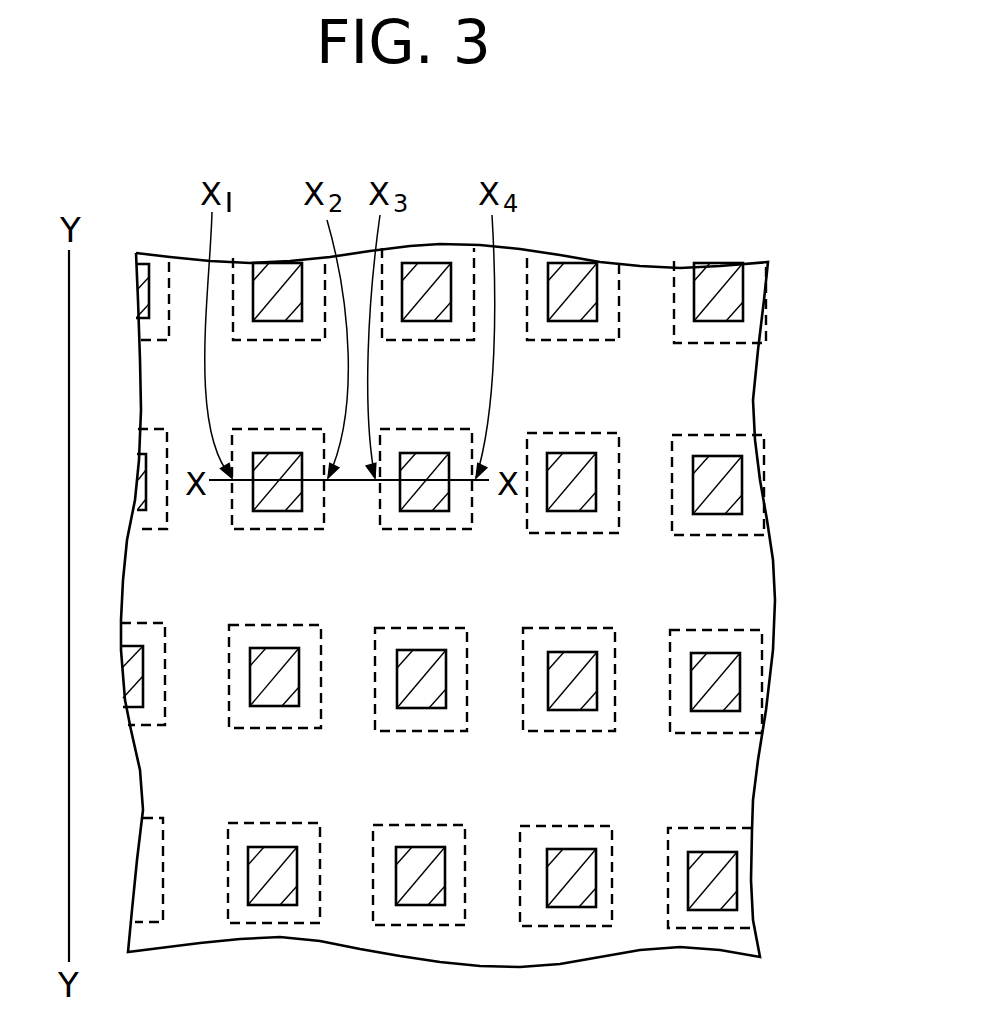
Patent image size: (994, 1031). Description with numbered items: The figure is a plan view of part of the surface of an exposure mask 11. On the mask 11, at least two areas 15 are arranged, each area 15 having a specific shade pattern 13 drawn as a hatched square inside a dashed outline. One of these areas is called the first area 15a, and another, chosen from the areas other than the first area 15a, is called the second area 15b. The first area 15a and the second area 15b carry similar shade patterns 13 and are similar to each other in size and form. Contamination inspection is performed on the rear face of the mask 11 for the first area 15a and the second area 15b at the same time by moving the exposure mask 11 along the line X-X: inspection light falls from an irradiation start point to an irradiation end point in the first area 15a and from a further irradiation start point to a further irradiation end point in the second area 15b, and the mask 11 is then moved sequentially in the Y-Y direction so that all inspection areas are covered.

The exposure mask 11 is at (718, 377).
The shade pattern 13 is at (715, 672).
The area 15 is at (583, 628).
The first area 15a is at (262, 530).
The second area 15b is at (430, 530).